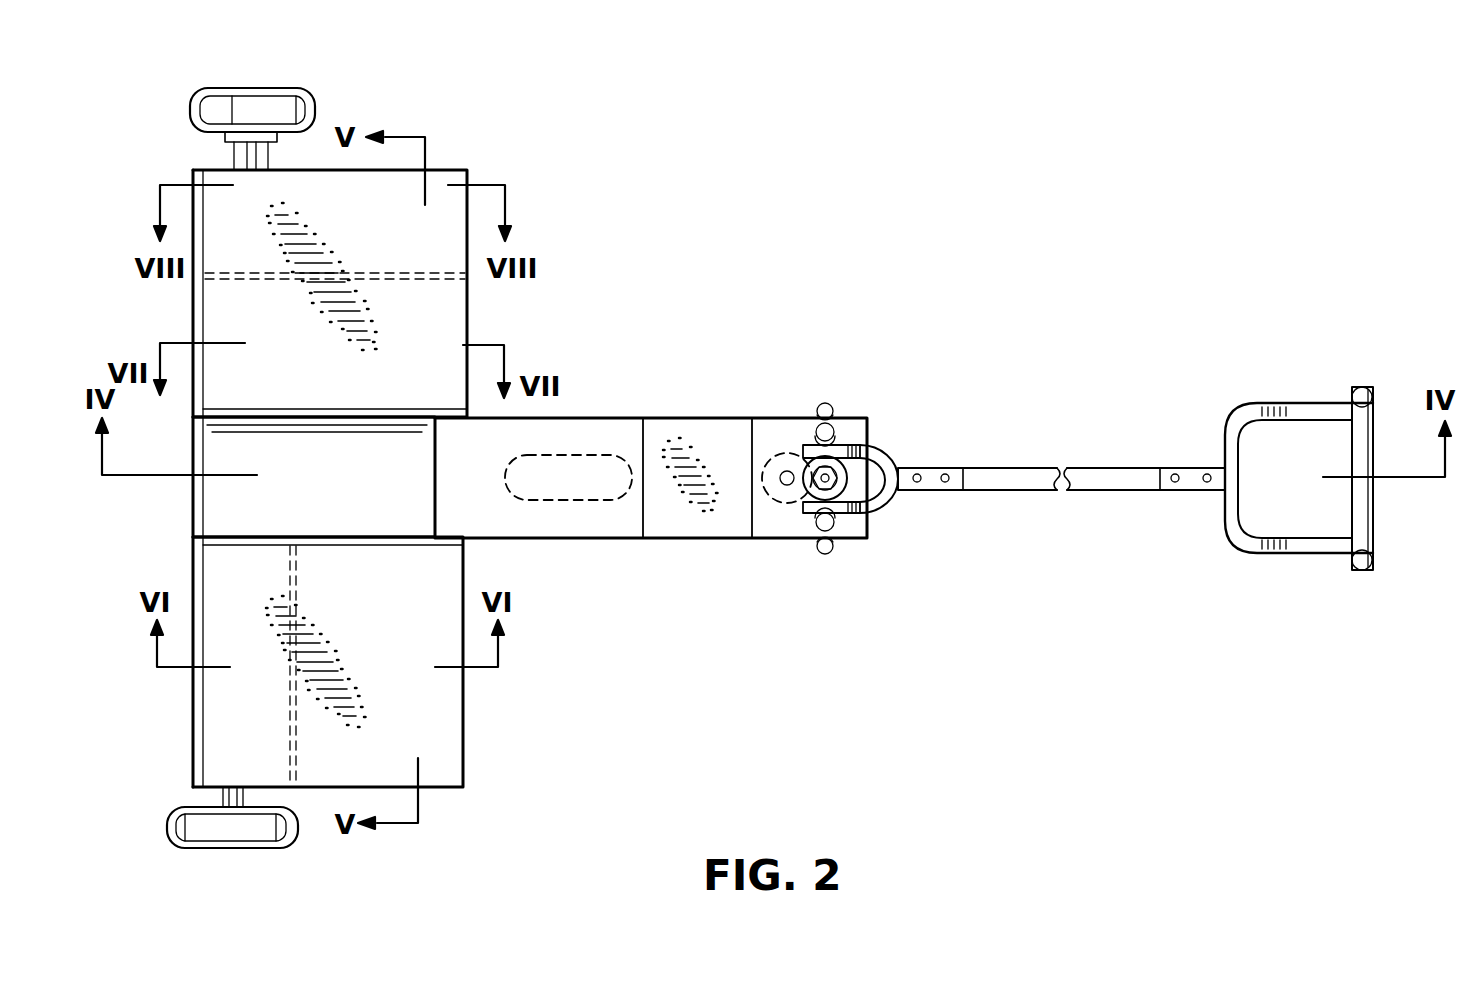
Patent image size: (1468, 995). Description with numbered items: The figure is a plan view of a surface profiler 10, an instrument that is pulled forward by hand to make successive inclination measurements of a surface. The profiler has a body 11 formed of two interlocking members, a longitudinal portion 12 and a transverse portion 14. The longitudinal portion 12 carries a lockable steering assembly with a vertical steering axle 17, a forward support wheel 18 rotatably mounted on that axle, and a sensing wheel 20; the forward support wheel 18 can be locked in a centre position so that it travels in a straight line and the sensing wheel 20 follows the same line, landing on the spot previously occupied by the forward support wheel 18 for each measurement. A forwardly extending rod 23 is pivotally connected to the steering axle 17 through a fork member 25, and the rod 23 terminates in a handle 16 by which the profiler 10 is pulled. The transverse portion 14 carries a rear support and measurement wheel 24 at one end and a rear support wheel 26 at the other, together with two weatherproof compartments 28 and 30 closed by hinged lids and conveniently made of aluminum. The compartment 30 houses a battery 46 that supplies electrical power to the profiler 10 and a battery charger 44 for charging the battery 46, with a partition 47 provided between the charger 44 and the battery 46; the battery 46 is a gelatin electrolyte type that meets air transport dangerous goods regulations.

The surface profiler 10 is at (770, 254).
The body 11 is at (558, 576).
The longitudinal portion 12 is at (677, 410).
The transverse portion 14 is at (535, 733).
The handle 16 is at (1235, 437).
The vertical steering axle 17 is at (818, 473).
The forward support wheel 18 is at (777, 498).
The sensing wheel 20 is at (605, 482).
The forwardly extending rod 23 is at (1012, 472).
The rear support and measurement wheel 24 is at (298, 90).
The fork member 25 is at (872, 505).
The rear support wheel 26 is at (284, 826).
The compartment 28 is at (450, 252).
The compartment 30 is at (222, 720).
The battery charger 44 is at (405, 578).
The battery 46 is at (235, 573).
The partition 47 is at (290, 752).